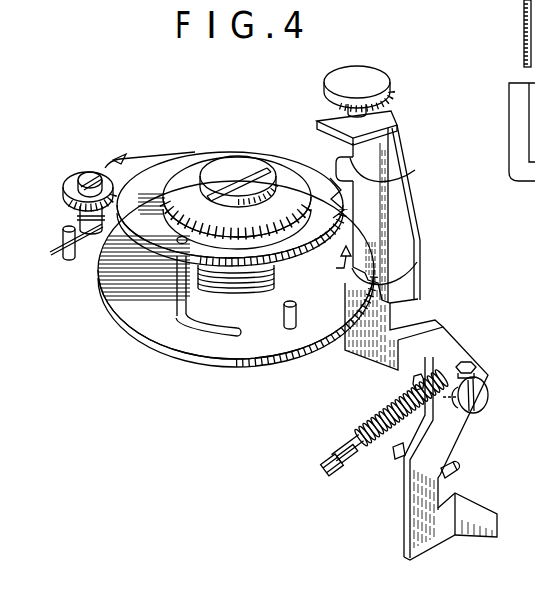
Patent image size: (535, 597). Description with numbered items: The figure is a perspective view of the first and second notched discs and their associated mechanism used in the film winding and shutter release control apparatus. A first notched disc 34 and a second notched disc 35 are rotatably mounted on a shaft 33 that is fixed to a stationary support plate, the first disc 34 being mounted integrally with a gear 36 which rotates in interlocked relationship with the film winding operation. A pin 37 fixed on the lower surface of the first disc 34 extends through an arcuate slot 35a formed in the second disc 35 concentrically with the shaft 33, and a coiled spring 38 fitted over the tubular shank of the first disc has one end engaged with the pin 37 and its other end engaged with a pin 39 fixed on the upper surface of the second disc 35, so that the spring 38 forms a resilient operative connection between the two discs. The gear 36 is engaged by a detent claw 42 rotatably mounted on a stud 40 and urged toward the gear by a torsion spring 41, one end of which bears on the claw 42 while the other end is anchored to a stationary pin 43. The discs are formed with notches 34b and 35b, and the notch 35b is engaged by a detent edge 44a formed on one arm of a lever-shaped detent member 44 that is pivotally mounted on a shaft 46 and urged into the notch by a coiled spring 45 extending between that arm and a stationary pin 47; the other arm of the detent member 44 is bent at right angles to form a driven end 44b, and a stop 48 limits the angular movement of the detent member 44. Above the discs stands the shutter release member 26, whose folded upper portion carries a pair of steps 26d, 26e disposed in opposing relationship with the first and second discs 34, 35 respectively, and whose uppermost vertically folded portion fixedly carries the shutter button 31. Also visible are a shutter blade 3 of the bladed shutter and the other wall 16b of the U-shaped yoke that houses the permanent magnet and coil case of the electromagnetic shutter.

The shutter blade 3 is at (524, 22).
The other wall of the yoke 16b is at (509, 122).
The shutter release member 26 is at (406, 233).
The step 26d is at (415, 170).
The step 26e is at (417, 262).
The shutter button 31 is at (377, 80).
The shaft 33 is at (250, 168).
The first notched disc 34 is at (167, 228).
The notch 34b is at (338, 160).
The second notched disc 35 is at (254, 352).
The arcuate slot 35a is at (203, 336).
The notch 35b is at (313, 248).
The gear 36 is at (217, 153).
The pin 37 is at (177, 318).
The coiled spring 38 is at (226, 282).
The pin 39 is at (284, 312).
The stud 40 is at (90, 182).
The torsion spring 41 is at (78, 222).
The detent claw 42 is at (147, 164).
The stationary pin 43 is at (74, 250).
The detent member 44 is at (476, 371).
The detent edge 44a is at (403, 230).
The driven end 44b is at (470, 522).
The coiled spring 45 is at (397, 412).
The shaft 46 is at (485, 404).
The stationary pin 47 is at (346, 462).
The stop 48 is at (452, 469).